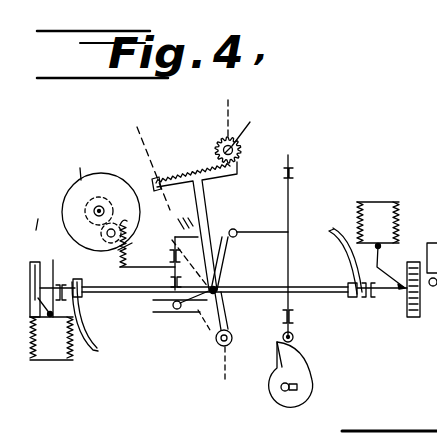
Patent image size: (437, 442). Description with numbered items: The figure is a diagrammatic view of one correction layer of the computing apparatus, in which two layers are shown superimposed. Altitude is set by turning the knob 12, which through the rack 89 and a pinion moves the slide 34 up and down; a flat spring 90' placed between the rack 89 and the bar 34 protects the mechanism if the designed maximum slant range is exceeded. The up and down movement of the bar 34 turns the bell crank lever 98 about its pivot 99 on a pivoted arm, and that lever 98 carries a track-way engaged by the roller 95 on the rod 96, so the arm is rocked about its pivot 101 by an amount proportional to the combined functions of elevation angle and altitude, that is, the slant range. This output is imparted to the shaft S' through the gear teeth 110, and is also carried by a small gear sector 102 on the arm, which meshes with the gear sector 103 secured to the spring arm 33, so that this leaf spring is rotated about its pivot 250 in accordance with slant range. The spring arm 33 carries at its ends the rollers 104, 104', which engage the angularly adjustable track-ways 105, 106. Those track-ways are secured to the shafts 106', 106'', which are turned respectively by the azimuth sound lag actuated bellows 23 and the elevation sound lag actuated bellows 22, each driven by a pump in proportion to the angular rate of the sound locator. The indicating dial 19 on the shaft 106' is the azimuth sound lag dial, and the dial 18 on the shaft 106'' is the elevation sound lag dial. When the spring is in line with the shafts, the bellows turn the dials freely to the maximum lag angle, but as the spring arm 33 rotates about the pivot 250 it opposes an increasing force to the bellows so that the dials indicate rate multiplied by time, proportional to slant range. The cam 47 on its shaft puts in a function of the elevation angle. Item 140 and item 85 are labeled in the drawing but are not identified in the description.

The knob 12 is at (101, 191).
The indicating dial 19 is at (47, 213).
The shaft 106' is at (56, 278).
The azimuth sound lag actuated flexible bellows 23 is at (53, 362).
The roller 104 is at (99, 279).
The track-way 105 is at (86, 316).
The spring arm 33 is at (294, 287).
The flat spring 90' is at (159, 256).
The rack 89 is at (187, 210).
The slide 34 is at (189, 230).
The lever arm 140 is at (201, 203).
The gear teeth 110 is at (250, 135).
The shaft S' is at (252, 124).
The roller 95 is at (240, 232).
The bell crank lever 98 is at (238, 248).
The pivot 99 is at (233, 288).
The pivot 250 is at (232, 305).
The rod 96 is at (289, 160).
The gear sector 103 is at (182, 316).
The gear sector 102 is at (212, 322).
The pivot 101 is at (221, 347).
The cam 47 is at (313, 380).
The track-way 106 is at (330, 251).
The elevation sound lag actuated flexible bellows 22 is at (363, 207).
The roller 104' is at (330, 304).
The shaft 106'' is at (383, 309).
The dial 18 is at (412, 268).
The member 85 is at (422, 201).